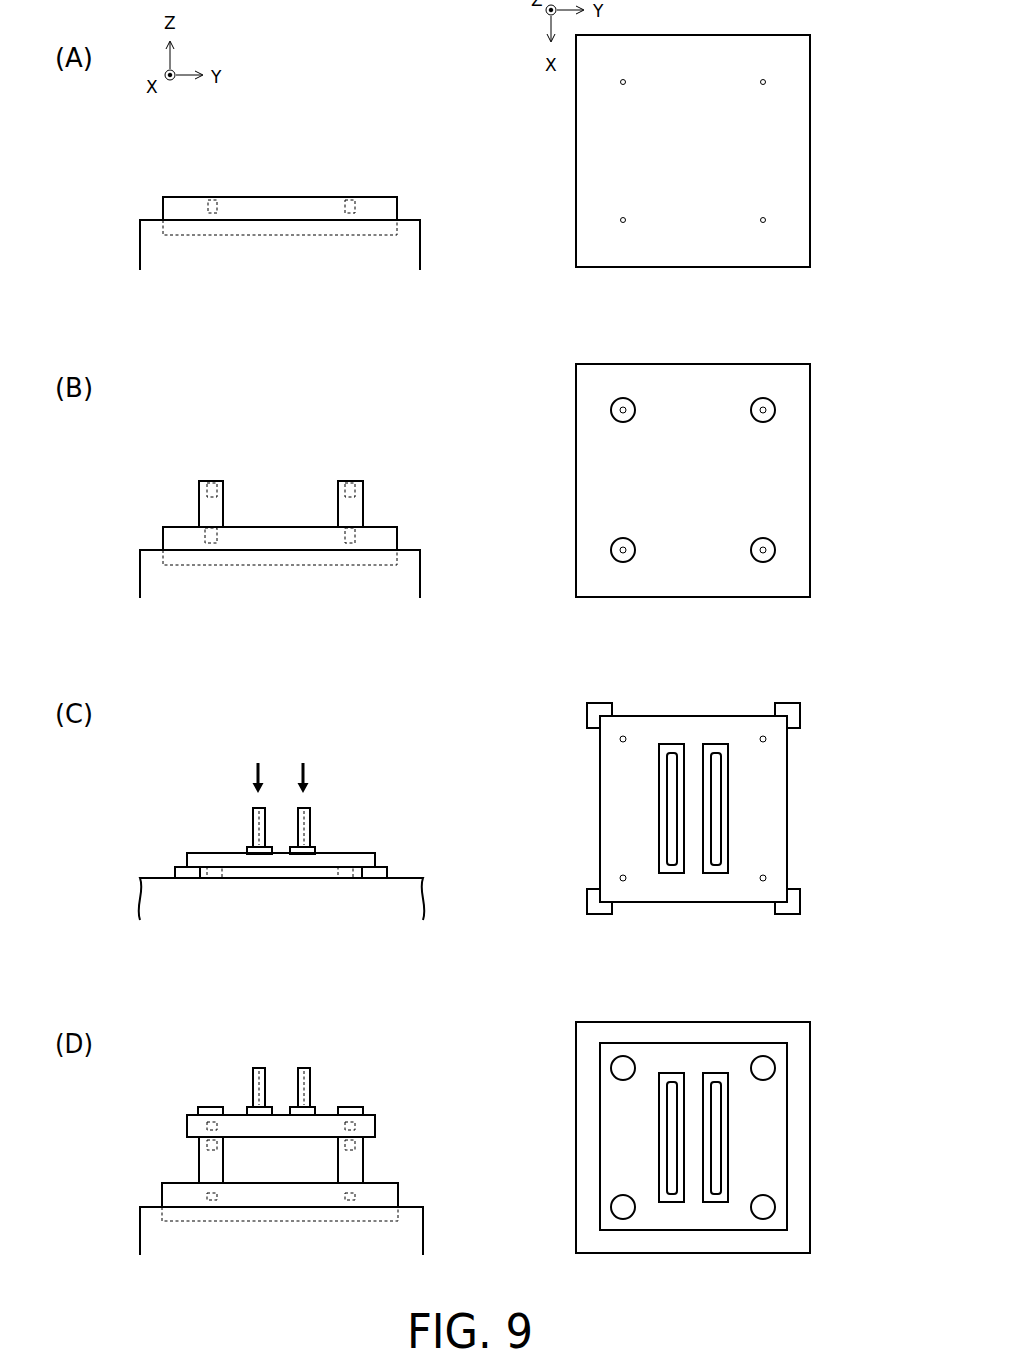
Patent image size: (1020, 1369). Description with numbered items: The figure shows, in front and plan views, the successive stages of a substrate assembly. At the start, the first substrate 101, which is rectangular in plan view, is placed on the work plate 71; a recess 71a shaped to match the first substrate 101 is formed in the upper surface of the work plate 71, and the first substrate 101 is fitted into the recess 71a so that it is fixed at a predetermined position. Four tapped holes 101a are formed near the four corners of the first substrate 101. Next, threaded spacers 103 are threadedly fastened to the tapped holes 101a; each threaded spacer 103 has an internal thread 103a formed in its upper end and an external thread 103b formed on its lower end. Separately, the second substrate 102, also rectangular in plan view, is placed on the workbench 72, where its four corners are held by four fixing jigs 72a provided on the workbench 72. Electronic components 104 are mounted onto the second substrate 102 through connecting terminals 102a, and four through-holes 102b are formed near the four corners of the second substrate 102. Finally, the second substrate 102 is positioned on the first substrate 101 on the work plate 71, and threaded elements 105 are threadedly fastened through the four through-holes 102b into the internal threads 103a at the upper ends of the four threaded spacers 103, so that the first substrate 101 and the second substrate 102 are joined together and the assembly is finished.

The work plate 71 is at (422, 244).
The recess 71a is at (267, 237).
The workbench 72 is at (400, 878).
The fixing jig 72a is at (178, 868).
The first substrate 101 is at (399, 203).
The tapped hole 101a is at (212, 192).
The second substrate 102 is at (197, 853).
The connecting terminal 102a is at (247, 850).
The through-hole 102b is at (220, 881).
The threaded spacer 103 is at (198, 503).
The internal thread 103a is at (212, 480).
The external thread 103b is at (208, 540).
The electronic component 104 is at (253, 815).
The threaded element 105 is at (610, 410).